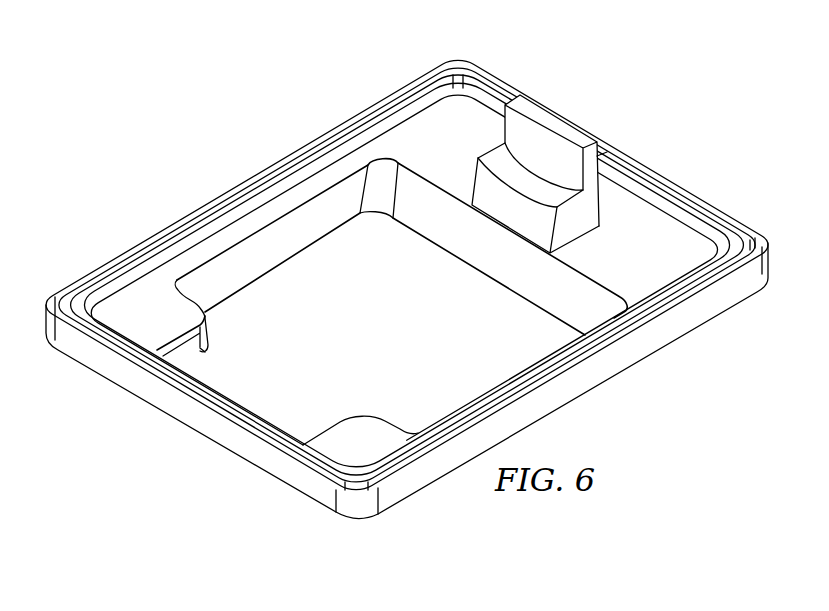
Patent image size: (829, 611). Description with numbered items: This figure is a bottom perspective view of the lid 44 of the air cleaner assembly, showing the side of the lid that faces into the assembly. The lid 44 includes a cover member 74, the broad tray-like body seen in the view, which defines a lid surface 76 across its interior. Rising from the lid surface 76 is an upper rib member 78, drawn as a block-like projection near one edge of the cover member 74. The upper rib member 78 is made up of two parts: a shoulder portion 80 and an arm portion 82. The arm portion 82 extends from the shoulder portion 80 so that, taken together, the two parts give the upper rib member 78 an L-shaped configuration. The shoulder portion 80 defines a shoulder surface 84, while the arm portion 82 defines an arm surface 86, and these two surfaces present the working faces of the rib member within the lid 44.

The lid 44 is at (678, 349).
The cover member 74 is at (377, 147).
The lid surface 76 is at (413, 128).
The upper rib member 78 is at (579, 112).
The shoulder portion 80 is at (513, 156).
The arm portion 82 is at (594, 157).
The shoulder surface 84 is at (500, 162).
The arm surface 86 is at (538, 135).